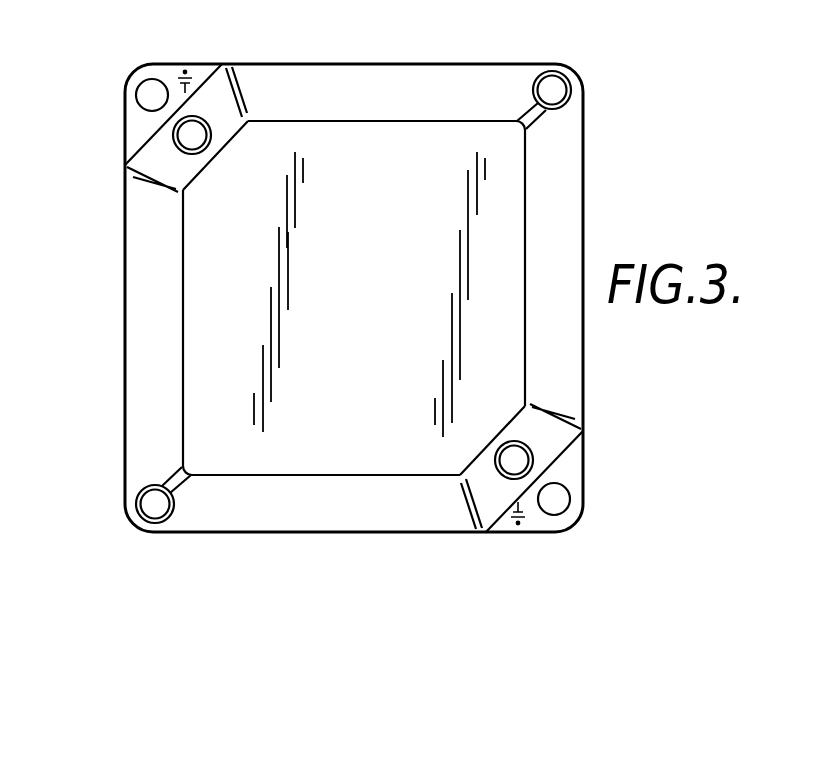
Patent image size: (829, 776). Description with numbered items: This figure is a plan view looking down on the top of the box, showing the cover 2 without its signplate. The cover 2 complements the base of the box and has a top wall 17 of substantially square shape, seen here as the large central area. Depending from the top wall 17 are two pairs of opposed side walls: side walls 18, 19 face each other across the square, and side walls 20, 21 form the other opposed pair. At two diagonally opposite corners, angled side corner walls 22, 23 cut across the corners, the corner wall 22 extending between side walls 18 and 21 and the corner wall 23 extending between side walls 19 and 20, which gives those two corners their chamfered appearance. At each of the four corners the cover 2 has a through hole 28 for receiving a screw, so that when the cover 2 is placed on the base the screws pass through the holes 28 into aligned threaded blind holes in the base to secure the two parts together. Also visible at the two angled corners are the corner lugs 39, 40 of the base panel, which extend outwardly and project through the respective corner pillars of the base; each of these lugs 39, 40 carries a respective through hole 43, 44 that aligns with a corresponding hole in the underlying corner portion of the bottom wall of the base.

The cover 2 is at (363, 305).
The top wall 17 is at (505, 260).
The side wall 18 is at (307, 533).
The side wall 19 is at (400, 64).
The side wall 20 is at (125, 310).
The side wall 21 is at (583, 352).
The angled side corner wall 22 is at (563, 450).
The angled side corner wall 23 is at (213, 77).
The through hole 28 is at (188, 138).
The corner lug 39 is at (575, 482).
The corner lug 40 is at (140, 68).
The through hole 43 is at (548, 502).
The through hole 44 is at (148, 98).